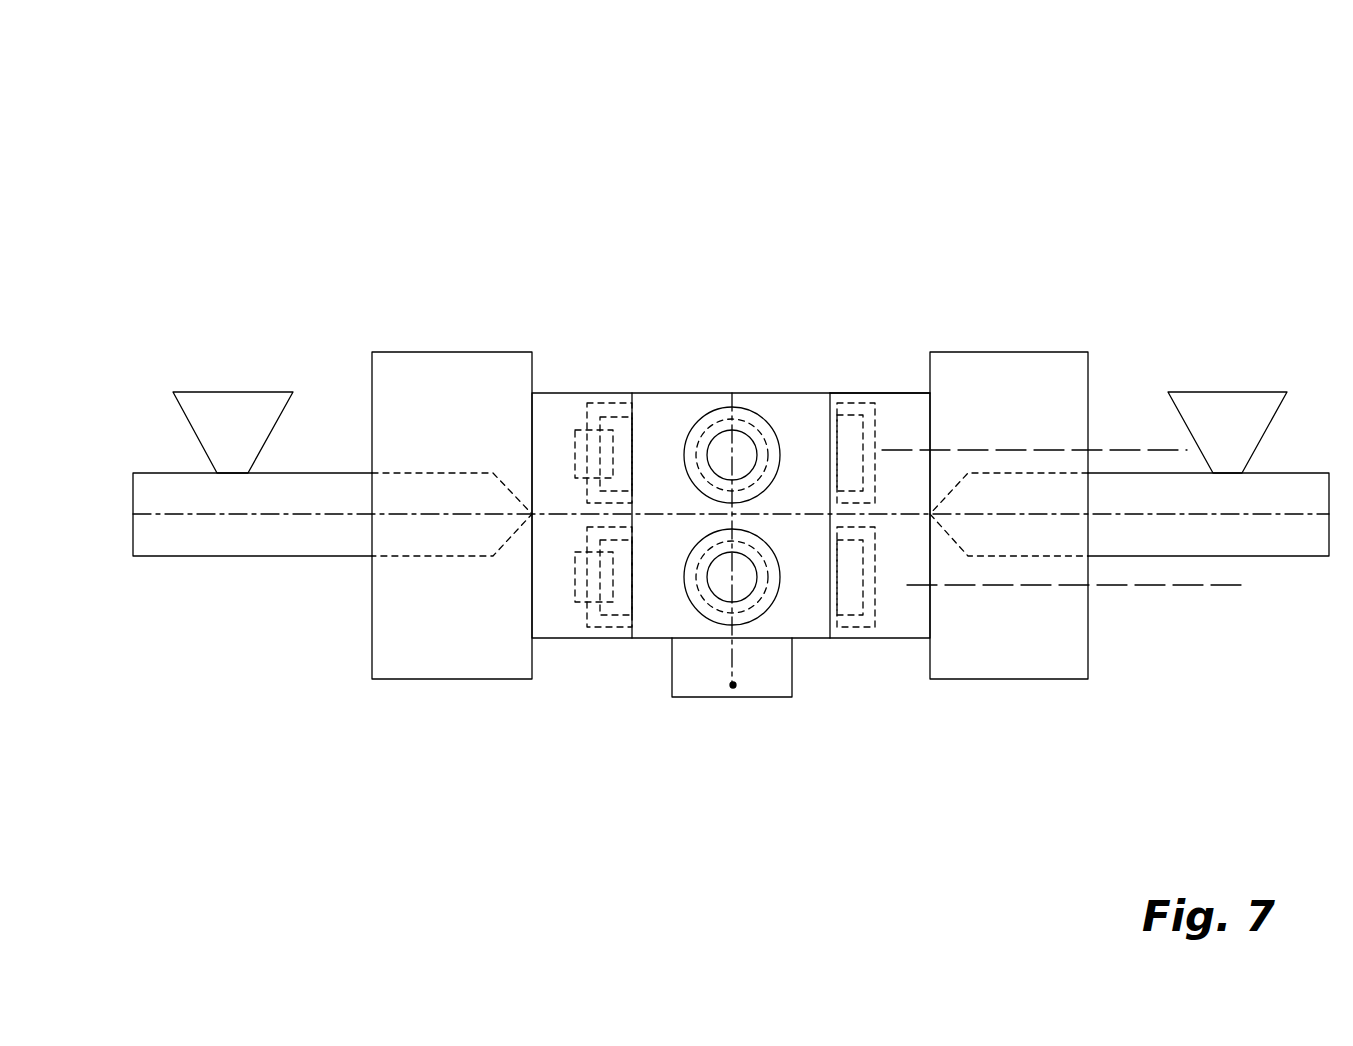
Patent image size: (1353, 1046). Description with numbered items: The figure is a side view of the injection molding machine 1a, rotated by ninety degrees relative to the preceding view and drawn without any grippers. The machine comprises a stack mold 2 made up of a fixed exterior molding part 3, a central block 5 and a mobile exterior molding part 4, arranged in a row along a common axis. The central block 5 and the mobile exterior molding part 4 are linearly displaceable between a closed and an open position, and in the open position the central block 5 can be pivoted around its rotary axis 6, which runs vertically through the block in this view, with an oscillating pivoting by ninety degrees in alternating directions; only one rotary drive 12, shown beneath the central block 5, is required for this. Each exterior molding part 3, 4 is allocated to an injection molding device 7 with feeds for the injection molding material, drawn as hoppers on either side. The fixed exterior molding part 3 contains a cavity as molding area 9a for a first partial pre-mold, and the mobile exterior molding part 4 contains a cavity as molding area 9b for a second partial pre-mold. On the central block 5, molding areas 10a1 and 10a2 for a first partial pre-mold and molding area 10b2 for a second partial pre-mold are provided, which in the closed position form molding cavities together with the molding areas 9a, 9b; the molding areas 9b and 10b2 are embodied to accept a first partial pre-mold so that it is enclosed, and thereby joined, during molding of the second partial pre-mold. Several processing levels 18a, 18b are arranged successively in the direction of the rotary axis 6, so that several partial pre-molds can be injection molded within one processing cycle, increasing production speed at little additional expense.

The injection molding machine 1a is at (731, 407).
The stack mold 2 is at (674, 459).
The fixed exterior molding part 3 is at (908, 408).
The mobile exterior molding part 4 is at (551, 405).
The central block 5 is at (671, 406).
The rotary axis 6 is at (735, 685).
The injection molding device 7 is at (317, 400).
The molding area 9a is at (870, 485).
The molding area 9b is at (575, 470).
The molding area 10a1 is at (772, 558).
The molding area 10a2 is at (842, 568).
The molding area 10b2 is at (624, 434).
The rotary drive 12 is at (678, 675).
The processing level 18a is at (1125, 591).
The processing level 18b is at (1118, 450).